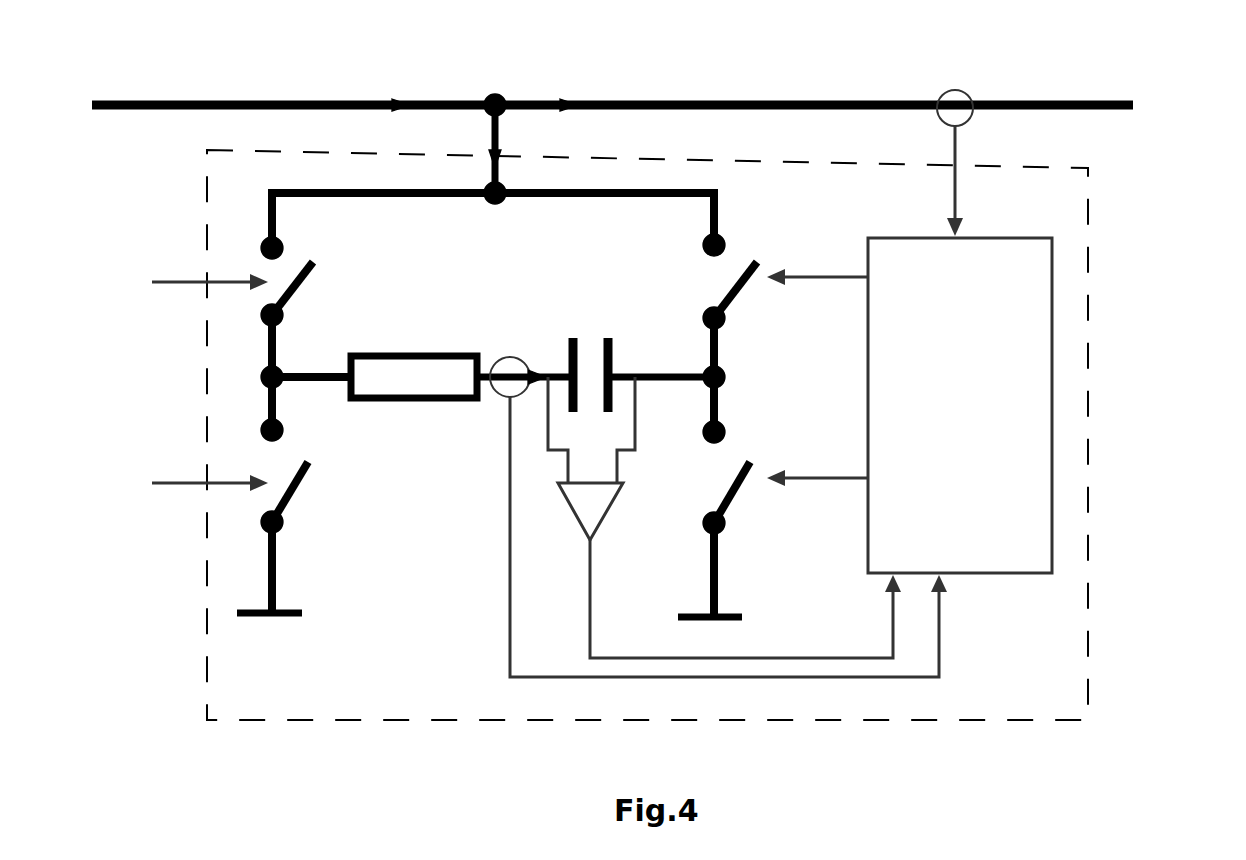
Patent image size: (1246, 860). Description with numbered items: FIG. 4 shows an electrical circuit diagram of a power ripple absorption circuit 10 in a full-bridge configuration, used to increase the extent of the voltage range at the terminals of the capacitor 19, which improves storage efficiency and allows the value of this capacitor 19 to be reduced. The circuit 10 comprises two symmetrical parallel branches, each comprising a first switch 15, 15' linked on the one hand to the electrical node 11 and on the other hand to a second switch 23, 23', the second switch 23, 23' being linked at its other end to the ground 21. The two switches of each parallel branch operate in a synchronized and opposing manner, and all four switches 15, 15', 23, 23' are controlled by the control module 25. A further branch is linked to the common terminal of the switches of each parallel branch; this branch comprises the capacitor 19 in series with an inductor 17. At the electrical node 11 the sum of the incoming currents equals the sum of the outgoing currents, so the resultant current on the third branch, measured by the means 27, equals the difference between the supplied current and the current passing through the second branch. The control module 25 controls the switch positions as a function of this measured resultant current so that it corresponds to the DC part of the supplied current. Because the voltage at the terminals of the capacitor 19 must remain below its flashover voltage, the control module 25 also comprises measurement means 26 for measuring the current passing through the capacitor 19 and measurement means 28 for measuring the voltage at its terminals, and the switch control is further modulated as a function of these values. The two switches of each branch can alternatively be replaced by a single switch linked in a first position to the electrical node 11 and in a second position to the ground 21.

The full-bridge configuration absorption circuit 10 is at (1088, 352).
The electrical node 11 is at (498, 96).
The first switch 15 is at (751, 318).
The first switch 15' is at (273, 308).
The inductor 17 is at (375, 350).
The capacitor 19 is at (568, 348).
The ground 21 is at (288, 620).
The second switch 23 is at (764, 539).
The second switch 23' is at (262, 537).
The control module 25 is at (781, 457).
The measurement means 26 is at (502, 396).
The means which measure a first current or resultant current 27 is at (966, 90).
The measurement means 28 is at (566, 488).